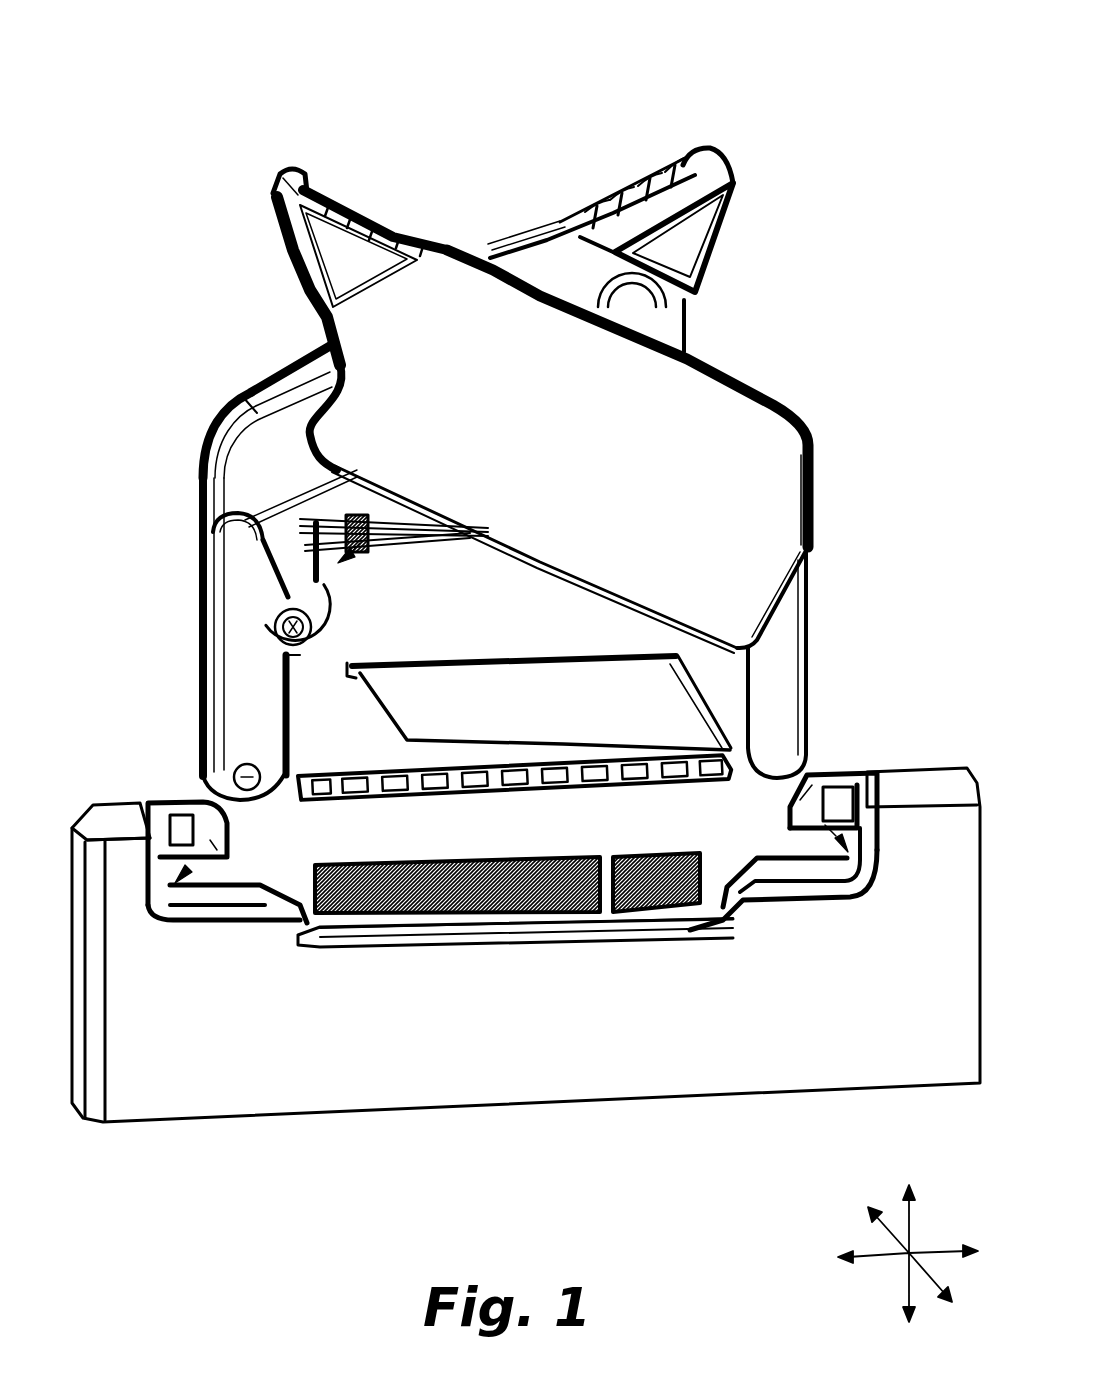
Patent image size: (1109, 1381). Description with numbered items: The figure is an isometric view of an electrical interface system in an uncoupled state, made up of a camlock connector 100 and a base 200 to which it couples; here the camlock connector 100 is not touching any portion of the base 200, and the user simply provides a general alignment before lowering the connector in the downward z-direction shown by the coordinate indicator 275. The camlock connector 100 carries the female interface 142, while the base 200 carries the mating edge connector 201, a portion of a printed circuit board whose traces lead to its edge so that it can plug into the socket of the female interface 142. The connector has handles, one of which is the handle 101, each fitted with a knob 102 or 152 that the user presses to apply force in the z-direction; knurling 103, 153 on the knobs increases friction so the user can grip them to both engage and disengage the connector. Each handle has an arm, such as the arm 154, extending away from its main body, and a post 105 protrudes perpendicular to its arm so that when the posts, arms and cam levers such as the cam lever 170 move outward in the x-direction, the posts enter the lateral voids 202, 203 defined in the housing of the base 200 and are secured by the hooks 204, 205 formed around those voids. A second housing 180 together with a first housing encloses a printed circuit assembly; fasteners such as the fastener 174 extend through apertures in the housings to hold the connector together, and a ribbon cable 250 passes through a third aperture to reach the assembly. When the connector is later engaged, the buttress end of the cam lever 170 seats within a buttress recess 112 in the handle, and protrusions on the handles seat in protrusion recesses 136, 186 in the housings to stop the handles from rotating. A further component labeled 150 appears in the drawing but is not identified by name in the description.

The camlock connector 100 is at (185, 195).
The handle 101 is at (583, 293).
The knob 102 is at (723, 165).
The knurling 103 is at (677, 165).
The post 105 is at (213, 760).
The buttress recess 112 is at (686, 328).
The protrusion recess 136 is at (333, 500).
The female interface 142 is at (650, 772).
The cover 150 is at (725, 448).
The knob 152 is at (272, 192).
The knurling 153 is at (338, 196).
The arm 154 is at (780, 662).
The cam lever 170 is at (247, 670).
The fastener 174 is at (268, 618).
The second housing 180 is at (305, 720).
The protrusion recess 186 is at (232, 525).
The base 200 is at (418, 1005).
The edge connector 201 is at (525, 913).
The lateral void 202 is at (160, 910).
The lateral void 203 is at (857, 825).
The hook 204 is at (208, 803).
The hook 205 is at (810, 825).
The ribbon cable 250 is at (700, 720).
The coordinate indicator 275 is at (870, 1298).